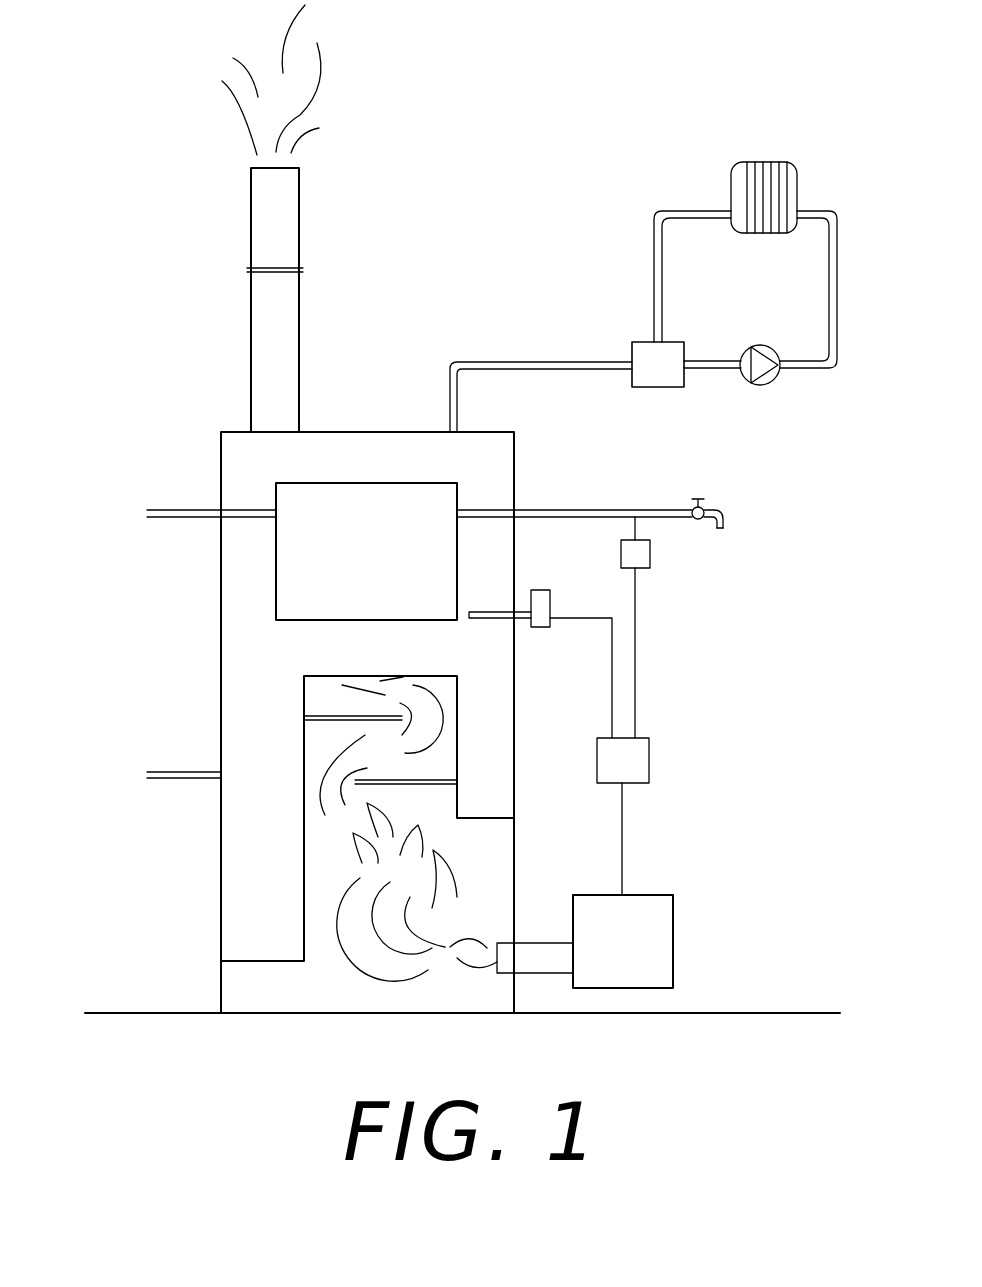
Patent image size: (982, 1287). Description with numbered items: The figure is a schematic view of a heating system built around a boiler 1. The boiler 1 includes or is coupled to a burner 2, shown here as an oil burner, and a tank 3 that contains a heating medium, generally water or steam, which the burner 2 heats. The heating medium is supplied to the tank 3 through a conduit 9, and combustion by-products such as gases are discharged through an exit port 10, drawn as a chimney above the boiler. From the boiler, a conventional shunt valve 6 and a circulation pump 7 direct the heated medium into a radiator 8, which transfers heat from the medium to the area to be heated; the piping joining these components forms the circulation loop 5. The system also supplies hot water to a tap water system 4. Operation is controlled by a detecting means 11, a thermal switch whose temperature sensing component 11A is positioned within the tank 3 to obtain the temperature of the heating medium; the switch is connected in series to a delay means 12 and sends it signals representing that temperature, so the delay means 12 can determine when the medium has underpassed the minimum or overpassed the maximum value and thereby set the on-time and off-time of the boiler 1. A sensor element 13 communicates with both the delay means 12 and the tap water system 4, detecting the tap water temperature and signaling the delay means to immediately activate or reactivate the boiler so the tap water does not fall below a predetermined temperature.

The boiler 1 is at (514, 749).
The burner 2 is at (673, 923).
The tank 3 is at (221, 657).
The tap water system 4 is at (665, 510).
The heating circulation loop pipe 5 is at (654, 300).
The shunt valve 6 is at (657, 390).
The circulation pump 7 is at (762, 385).
The radiator 8 is at (731, 190).
The conduit 9 is at (178, 510).
The exit port 10 is at (299, 241).
The detecting means 11 is at (550, 605).
The temperature sensing component 11A is at (483, 620).
The delay means 12 is at (650, 756).
The sensor element 13 is at (650, 556).